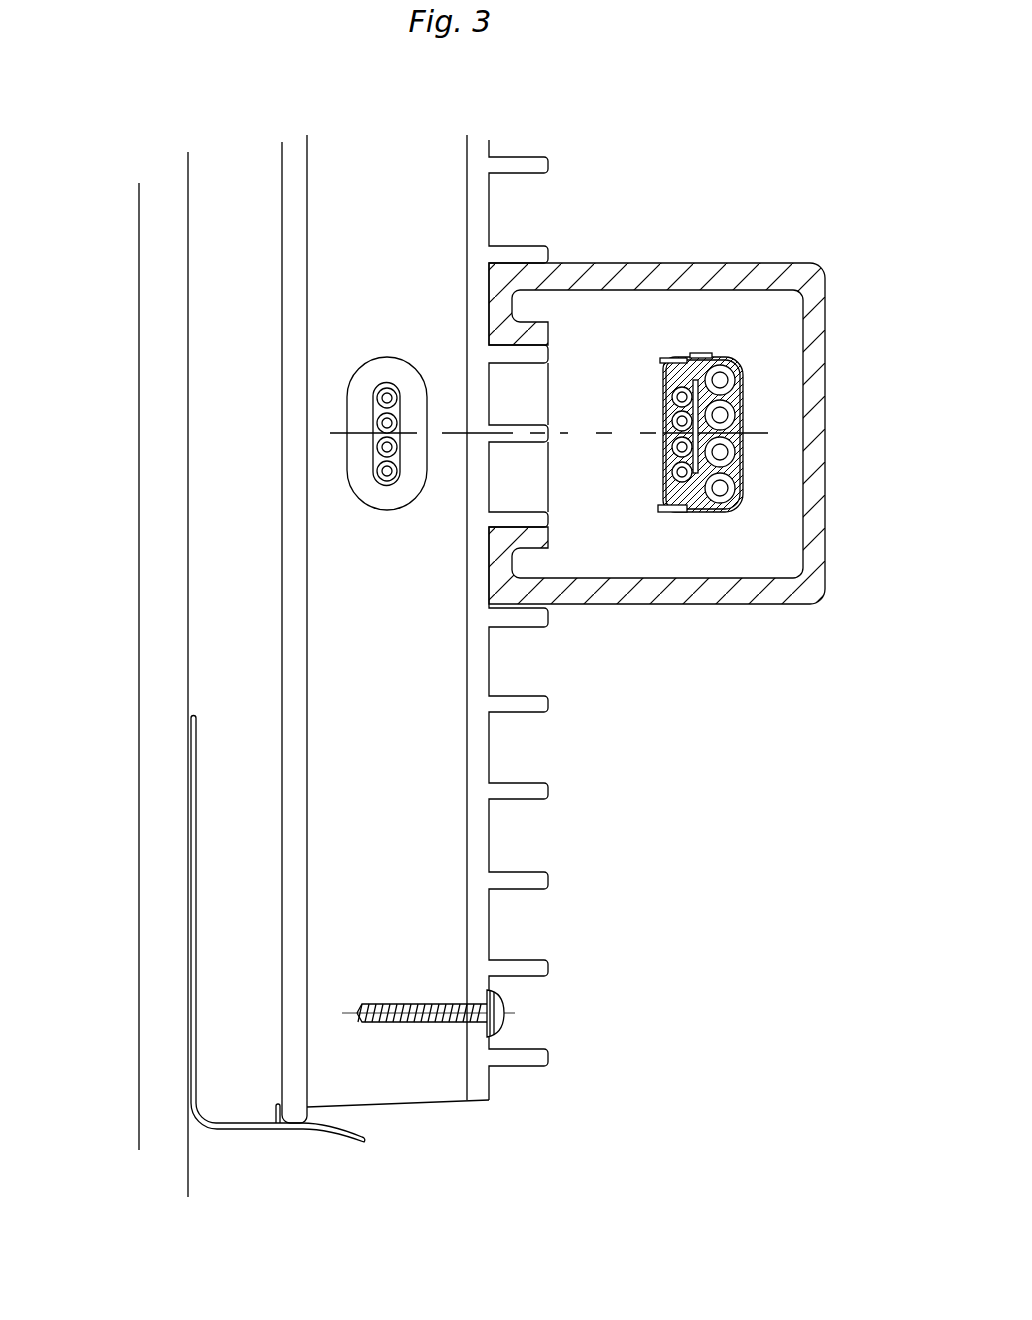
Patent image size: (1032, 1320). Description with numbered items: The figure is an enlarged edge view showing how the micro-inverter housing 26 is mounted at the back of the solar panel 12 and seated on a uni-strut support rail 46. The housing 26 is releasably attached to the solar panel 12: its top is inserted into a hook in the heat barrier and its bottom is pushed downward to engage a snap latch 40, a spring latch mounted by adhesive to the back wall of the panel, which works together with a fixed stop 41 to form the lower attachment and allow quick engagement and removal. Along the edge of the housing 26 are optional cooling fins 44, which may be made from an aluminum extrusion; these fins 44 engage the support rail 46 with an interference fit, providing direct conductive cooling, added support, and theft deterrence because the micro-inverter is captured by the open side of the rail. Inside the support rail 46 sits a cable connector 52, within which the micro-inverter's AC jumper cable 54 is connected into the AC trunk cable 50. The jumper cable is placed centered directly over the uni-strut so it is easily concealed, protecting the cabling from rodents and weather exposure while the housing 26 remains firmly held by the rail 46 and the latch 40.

The solar panel 12 is at (116, 644).
The micro-inverter housing 26 is at (424, 1120).
The snap latch 40 is at (322, 1140).
The fixed stop 41 is at (264, 1092).
The cooling fins 44 is at (563, 886).
The support rail 46 is at (841, 360).
The AC trunk cable 50 is at (758, 462).
The cable connector 52 is at (715, 339).
The AC jumper cable 54 is at (394, 369).